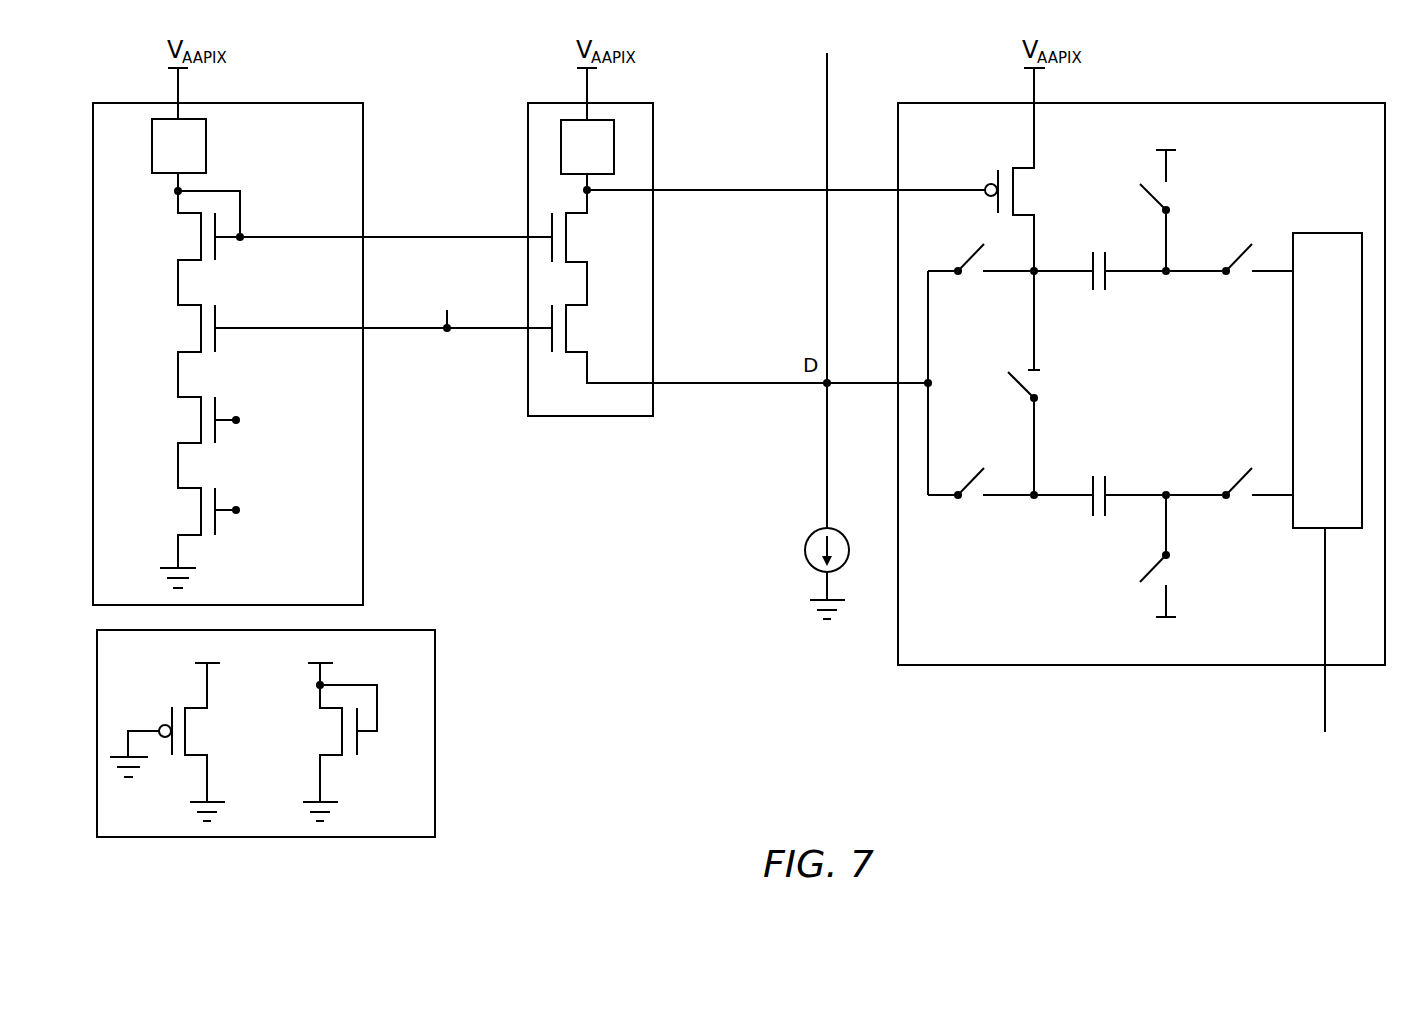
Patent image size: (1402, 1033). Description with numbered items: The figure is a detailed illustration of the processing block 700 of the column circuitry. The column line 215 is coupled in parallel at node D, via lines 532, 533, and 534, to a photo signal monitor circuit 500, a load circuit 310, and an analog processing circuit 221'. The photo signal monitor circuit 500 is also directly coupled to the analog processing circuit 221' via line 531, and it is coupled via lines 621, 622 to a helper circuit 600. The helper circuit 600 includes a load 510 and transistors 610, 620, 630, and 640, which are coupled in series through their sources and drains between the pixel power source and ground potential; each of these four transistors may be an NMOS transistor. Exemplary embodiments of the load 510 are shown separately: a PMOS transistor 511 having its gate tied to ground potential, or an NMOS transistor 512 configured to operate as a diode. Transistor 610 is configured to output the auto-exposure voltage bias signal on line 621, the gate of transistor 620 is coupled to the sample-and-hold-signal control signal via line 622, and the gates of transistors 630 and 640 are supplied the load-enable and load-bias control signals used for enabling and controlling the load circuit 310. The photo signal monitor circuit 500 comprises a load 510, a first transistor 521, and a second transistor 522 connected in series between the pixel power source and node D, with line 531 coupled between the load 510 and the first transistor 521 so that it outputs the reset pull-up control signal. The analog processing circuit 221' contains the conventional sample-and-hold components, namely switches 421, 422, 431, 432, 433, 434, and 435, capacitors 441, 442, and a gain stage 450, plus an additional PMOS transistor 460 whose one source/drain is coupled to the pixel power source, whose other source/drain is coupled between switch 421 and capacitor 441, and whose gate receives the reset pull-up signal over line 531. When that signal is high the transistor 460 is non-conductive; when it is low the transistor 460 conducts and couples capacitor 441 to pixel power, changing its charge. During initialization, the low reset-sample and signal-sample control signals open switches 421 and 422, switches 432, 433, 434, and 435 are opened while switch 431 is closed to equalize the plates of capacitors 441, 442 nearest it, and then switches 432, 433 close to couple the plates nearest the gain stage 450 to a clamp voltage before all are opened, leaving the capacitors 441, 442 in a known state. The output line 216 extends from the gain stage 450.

The processing block 700 is at (693, 744).
The helper circuit 600 is at (285, 103).
The load 510 is at (198, 160).
The transistor 610 is at (200, 238).
The transistor 620 is at (200, 329).
The transistor 630 is at (200, 421).
The transistor 640 is at (200, 511).
The photo signal monitor circuit 500 is at (640, 103).
The first transistor 521 is at (568, 238).
The second transistor 522 is at (568, 329).
The line 621 is at (505, 240).
The line 622 is at (488, 330).
The line 531 is at (733, 192).
The line 532 is at (727, 386).
The line 533 is at (827, 470).
The line 534 is at (853, 398).
The column line 215 is at (827, 60).
The analog processing circuit 221' is at (1134, 360).
The additional transistor 460 is at (1022, 166).
The switch 421 is at (970, 250).
The switch 422 is at (968, 480).
The switch 431 is at (1014, 386).
The switch 432 is at (1140, 195).
The switch 433 is at (1148, 572).
The switch 434 is at (1237, 258).
The switch 435 is at (1237, 482).
The capacitor 441 is at (1088, 257).
The capacitor 442 is at (1088, 480).
The gain stage 450 is at (1346, 397).
The load circuit 310 is at (805, 550).
The output line 216 is at (1325, 705).
The PMOS transistor 511 is at (198, 706).
The NMOS transistor 512 is at (340, 730).